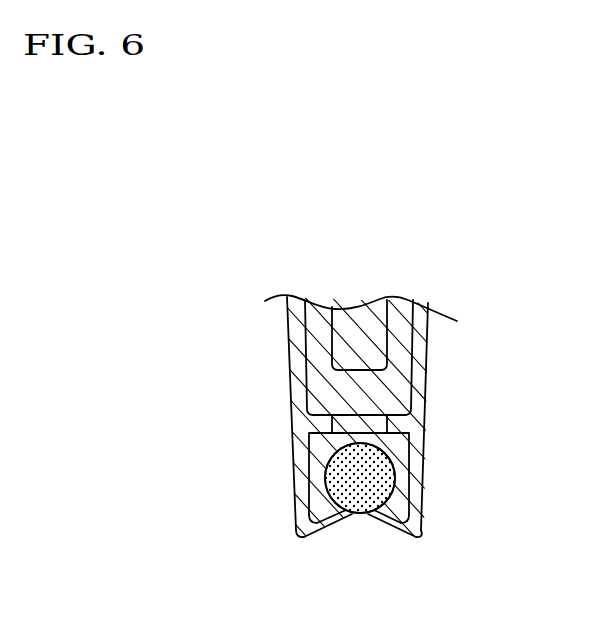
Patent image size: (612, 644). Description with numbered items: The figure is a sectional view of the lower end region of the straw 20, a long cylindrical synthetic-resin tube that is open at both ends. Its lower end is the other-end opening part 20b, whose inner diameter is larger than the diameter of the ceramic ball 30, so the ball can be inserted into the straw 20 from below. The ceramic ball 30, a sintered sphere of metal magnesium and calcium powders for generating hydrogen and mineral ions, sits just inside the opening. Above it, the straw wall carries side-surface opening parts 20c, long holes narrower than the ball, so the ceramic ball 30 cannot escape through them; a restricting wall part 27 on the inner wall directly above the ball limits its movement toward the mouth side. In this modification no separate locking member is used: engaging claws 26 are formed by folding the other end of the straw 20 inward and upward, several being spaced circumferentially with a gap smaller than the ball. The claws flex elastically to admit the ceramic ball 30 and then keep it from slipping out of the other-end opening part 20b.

The straw 20 is at (504, 298).
The other-end opening part 20b is at (320, 507).
The side-surface opening parts 20c is at (348, 333).
The engaging claws 26 is at (330, 523).
The restricting wall part 27 is at (394, 422).
The ceramic ball 30 is at (378, 475).